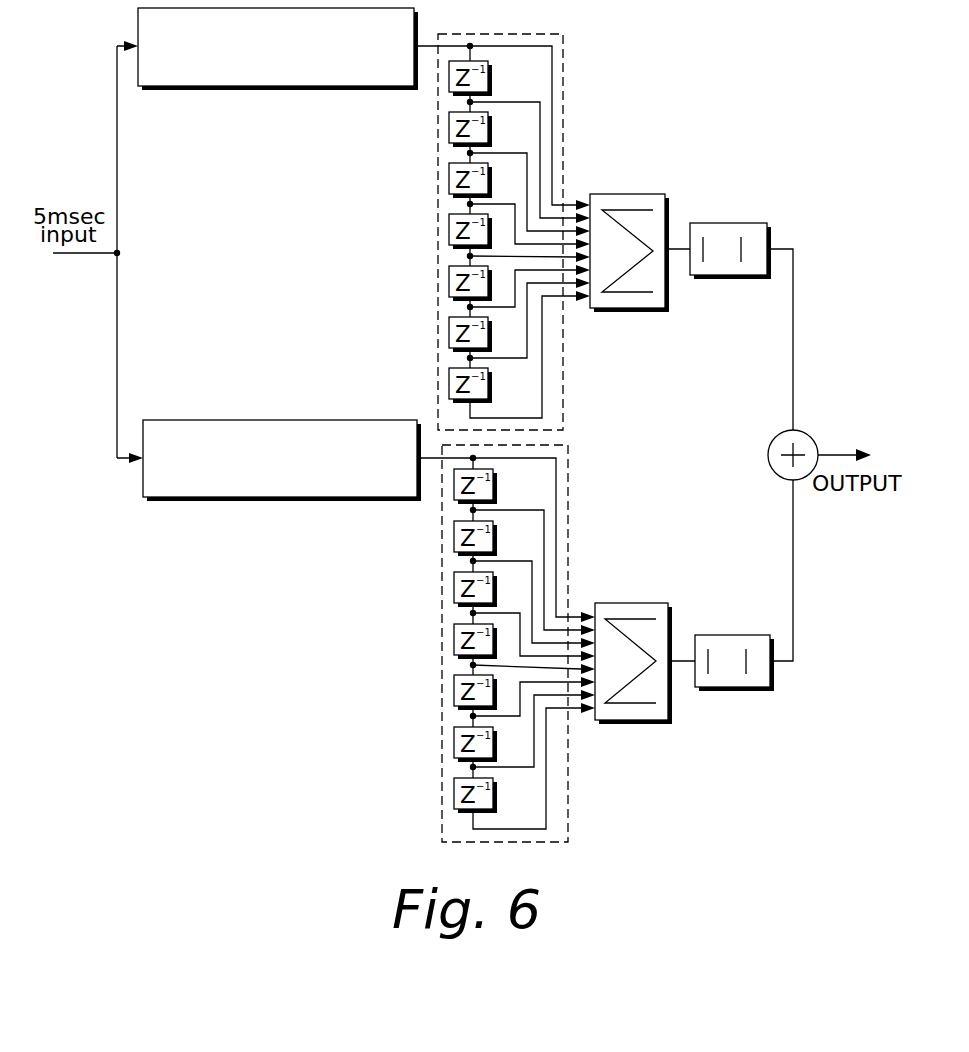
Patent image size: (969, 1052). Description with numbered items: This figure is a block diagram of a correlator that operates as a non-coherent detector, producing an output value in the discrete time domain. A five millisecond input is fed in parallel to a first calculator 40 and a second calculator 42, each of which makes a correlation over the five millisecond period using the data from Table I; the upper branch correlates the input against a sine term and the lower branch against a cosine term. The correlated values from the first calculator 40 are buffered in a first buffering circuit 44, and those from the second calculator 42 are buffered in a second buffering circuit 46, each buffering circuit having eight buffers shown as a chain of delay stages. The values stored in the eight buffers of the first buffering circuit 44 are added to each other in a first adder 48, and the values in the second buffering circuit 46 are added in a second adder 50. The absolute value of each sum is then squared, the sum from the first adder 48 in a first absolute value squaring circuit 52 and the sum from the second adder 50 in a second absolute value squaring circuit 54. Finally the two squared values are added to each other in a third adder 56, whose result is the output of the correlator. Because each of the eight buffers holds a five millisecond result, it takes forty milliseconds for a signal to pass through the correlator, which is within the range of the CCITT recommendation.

The first calculator 40 is at (277, 87).
The second calculator 42 is at (277, 420).
The first buffering circuit 44 is at (563, 83).
The second buffering circuit 46 is at (568, 505).
The first adder 48 is at (626, 193).
The second adder 50 is at (630, 603).
The first absolute value squaring circuit 52 is at (725, 223).
The second absolute value squaring circuit 54 is at (728, 635).
The third adder 56 is at (768, 455).